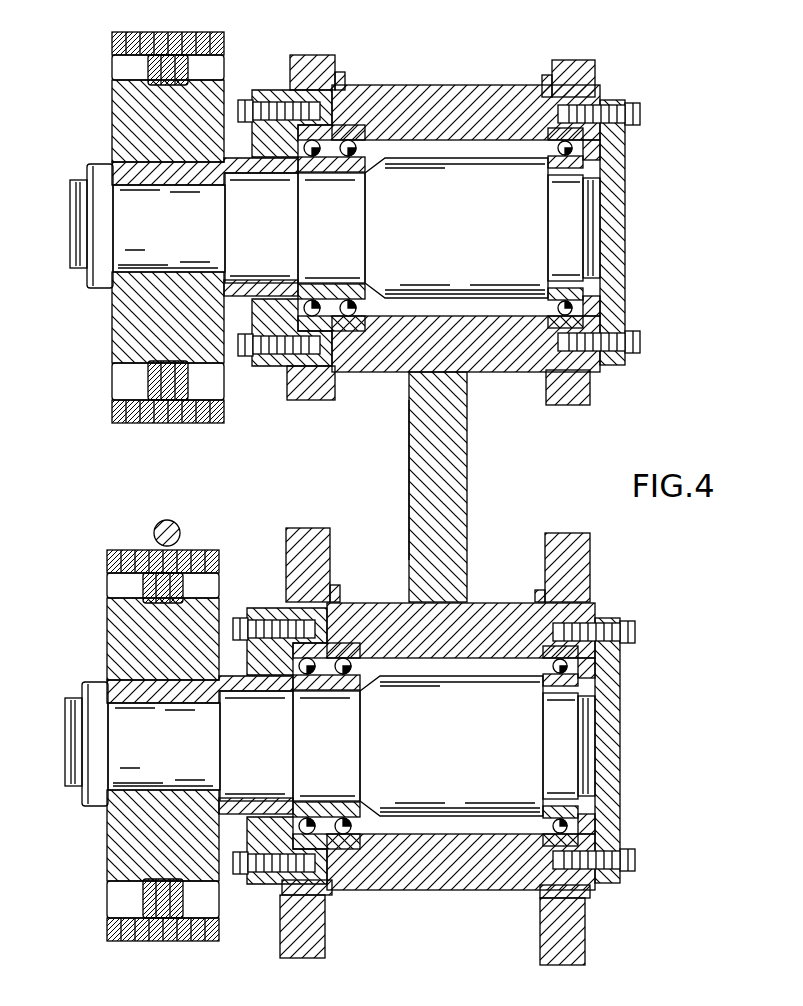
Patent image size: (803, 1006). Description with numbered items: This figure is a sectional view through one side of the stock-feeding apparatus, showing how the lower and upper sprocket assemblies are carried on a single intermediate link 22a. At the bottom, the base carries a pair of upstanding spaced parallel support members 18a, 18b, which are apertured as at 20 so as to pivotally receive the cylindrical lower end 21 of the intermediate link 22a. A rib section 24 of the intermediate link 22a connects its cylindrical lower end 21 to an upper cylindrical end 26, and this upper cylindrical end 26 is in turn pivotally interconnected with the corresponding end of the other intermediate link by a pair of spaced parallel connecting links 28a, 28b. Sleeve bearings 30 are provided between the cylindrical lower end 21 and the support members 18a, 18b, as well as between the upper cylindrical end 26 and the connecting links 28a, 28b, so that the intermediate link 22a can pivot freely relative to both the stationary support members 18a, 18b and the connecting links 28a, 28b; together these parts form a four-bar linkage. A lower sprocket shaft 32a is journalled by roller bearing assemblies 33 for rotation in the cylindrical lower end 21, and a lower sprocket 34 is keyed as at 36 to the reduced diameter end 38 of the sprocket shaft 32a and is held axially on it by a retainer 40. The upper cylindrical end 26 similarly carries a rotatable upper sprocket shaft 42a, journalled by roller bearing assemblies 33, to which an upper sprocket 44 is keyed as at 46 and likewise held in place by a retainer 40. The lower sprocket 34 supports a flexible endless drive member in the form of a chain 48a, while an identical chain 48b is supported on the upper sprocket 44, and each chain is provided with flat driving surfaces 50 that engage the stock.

The support member 18a is at (287, 928).
The support member 18b is at (582, 940).
The aperture 20 is at (310, 900).
The cylindrical lower end 21 is at (422, 876).
The intermediate link 22a is at (398, 472).
The rib section 24 is at (462, 498).
The upper cylindrical end 26 is at (411, 92).
The connecting link 28a is at (308, 62).
The connecting link 28b is at (580, 68).
The sleeve bearing 30 is at (292, 374).
The sprocket shaft 32a is at (447, 695).
The roller bearing assembly 33 is at (325, 290).
The lower sprocket 34 is at (108, 858).
The key 36 is at (118, 682).
The reduced diameter end 38 is at (118, 768).
The retainer 40 is at (92, 278).
The sprocket shaft 42a is at (452, 178).
The upper sprocket 44 is at (118, 113).
The key 46 is at (125, 162).
The chain 48a is at (110, 553).
The chain 48b is at (115, 418).
The flat driving surface 50 is at (200, 420).